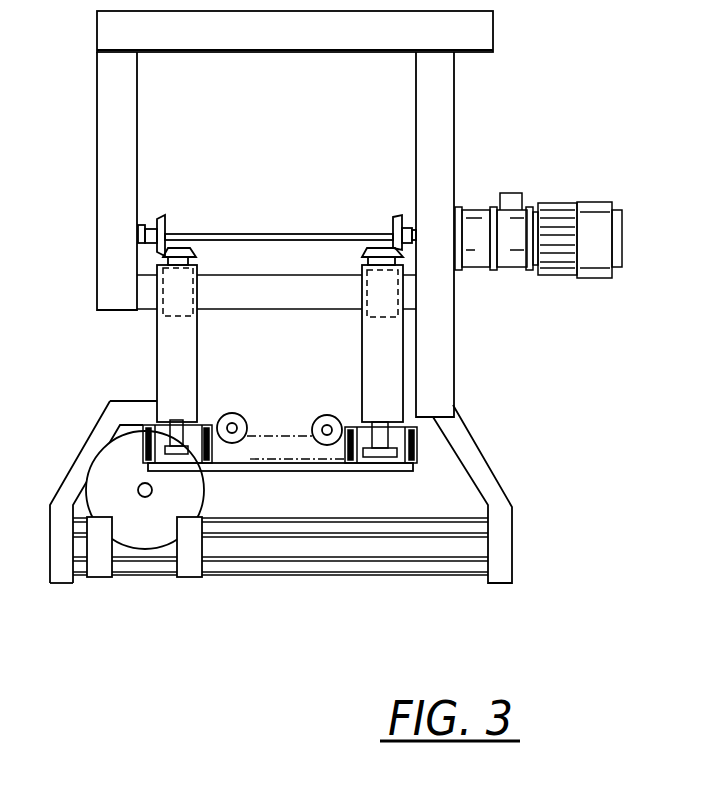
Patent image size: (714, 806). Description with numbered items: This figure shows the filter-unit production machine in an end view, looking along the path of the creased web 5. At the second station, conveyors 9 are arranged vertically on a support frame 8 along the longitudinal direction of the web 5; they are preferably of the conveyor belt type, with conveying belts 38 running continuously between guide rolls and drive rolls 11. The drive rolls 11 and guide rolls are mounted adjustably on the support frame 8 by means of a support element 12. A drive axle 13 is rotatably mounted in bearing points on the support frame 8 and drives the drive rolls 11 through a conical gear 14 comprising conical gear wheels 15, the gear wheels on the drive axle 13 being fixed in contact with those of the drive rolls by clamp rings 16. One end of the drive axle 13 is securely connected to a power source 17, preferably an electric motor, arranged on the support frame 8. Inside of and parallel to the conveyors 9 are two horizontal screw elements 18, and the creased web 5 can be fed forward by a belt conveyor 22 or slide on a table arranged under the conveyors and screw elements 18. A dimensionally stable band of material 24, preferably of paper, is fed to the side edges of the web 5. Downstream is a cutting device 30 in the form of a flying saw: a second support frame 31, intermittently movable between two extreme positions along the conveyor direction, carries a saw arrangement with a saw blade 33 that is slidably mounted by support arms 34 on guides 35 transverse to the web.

The web 5 is at (300, 436).
The support frame 8 is at (445, 132).
The conveyors 9 is at (425, 442).
The drive rolls 11 is at (157, 360).
The support element 12 is at (148, 310).
The drive axle 13 is at (256, 232).
The conical gear 14 is at (385, 229).
The conical gear wheels 15 is at (166, 216).
The clamp rings 16 is at (153, 222).
The power source 17 is at (620, 232).
The screw elements 18 is at (215, 413).
The belt conveyor 22 is at (408, 474).
The band of material 24 is at (215, 452).
The cutting device 30 is at (46, 560).
The second support frame 31 is at (513, 547).
The saw blade 33 is at (148, 577).
The support arms 34 is at (200, 577).
The guides 35 is at (240, 573).
The conveying belts 38 is at (415, 457).